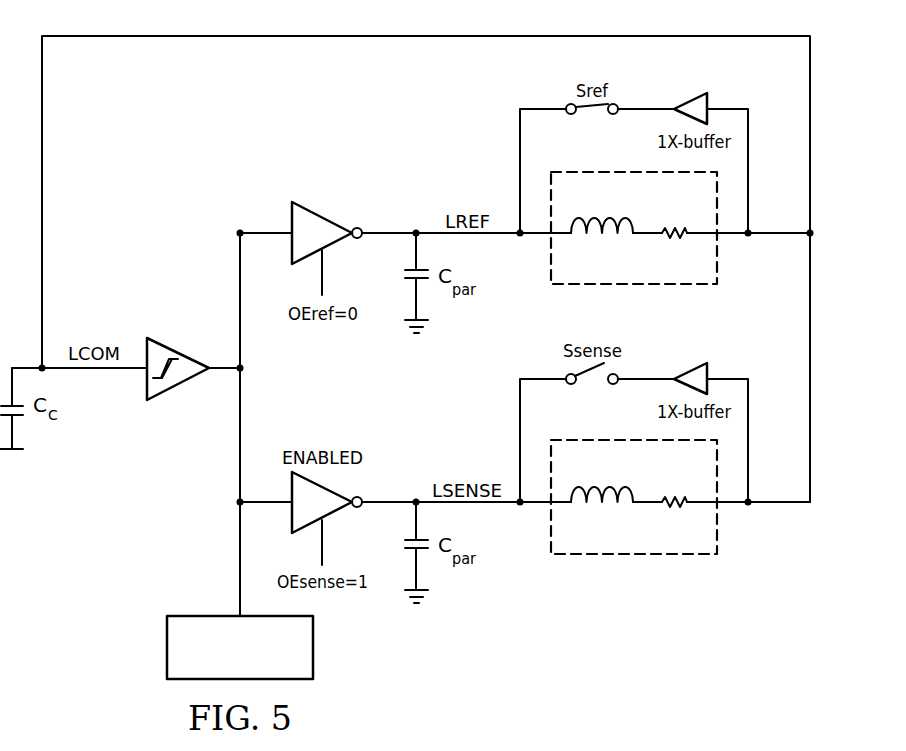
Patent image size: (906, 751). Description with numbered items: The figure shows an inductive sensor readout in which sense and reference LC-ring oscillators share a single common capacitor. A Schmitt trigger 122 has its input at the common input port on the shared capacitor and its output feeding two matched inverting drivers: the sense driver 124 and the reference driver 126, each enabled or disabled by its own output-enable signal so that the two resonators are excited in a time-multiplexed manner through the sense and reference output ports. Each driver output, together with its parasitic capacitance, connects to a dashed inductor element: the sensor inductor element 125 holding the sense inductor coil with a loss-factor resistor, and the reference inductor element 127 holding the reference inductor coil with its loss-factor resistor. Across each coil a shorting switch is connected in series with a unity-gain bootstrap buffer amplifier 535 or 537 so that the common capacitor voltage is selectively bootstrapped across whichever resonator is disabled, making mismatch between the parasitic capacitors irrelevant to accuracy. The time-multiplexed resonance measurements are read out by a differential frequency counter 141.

The Schmitt trigger 122 is at (178, 350).
The Lref inverting driver 126 is at (337, 225).
The Lsense inverting driver 124 is at (337, 510).
The bootstrap buffer amplifier 537 is at (678, 100).
The bootstrap buffer amplifier 535 is at (678, 370).
The inductor element 127 is at (718, 252).
The inductor element 125 is at (657, 557).
The differential frequency counter 141 is at (167, 650).